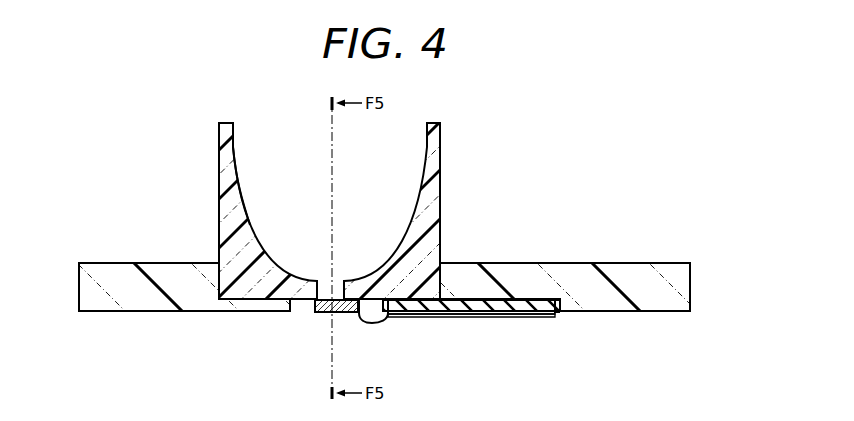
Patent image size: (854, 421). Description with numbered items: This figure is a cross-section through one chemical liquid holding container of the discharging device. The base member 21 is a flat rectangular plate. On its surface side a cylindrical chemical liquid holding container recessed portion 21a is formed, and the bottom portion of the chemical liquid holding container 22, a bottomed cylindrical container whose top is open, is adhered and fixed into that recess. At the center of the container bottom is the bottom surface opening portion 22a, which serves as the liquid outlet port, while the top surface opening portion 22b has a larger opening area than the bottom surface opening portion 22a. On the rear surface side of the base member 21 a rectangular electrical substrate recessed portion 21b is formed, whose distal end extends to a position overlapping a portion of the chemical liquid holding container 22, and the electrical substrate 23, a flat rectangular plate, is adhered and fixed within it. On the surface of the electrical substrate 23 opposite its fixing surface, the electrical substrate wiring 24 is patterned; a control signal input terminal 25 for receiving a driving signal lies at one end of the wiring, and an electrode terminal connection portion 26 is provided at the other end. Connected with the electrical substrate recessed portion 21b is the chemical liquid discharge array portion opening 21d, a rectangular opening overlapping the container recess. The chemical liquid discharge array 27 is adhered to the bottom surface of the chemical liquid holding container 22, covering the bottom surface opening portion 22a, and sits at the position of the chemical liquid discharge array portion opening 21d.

The base member 21 is at (95, 281).
The chemical liquid holding container recessed portion 21a is at (230, 276).
The electrical substrate recessed portion 21b is at (548, 318).
The chemical liquid discharge array portion opening 21d is at (303, 303).
The chemical liquid holding container 22 is at (234, 178).
The bottom surface opening portion 22a is at (323, 283).
The top surface opening portion 22b is at (239, 150).
The electrical substrate 23 is at (517, 300).
The electrical substrate wiring 24 is at (468, 318).
The control signal input terminal 25 is at (505, 318).
The electrode terminal connection portion 26 is at (396, 319).
The chemical liquid discharge array 27 is at (322, 318).